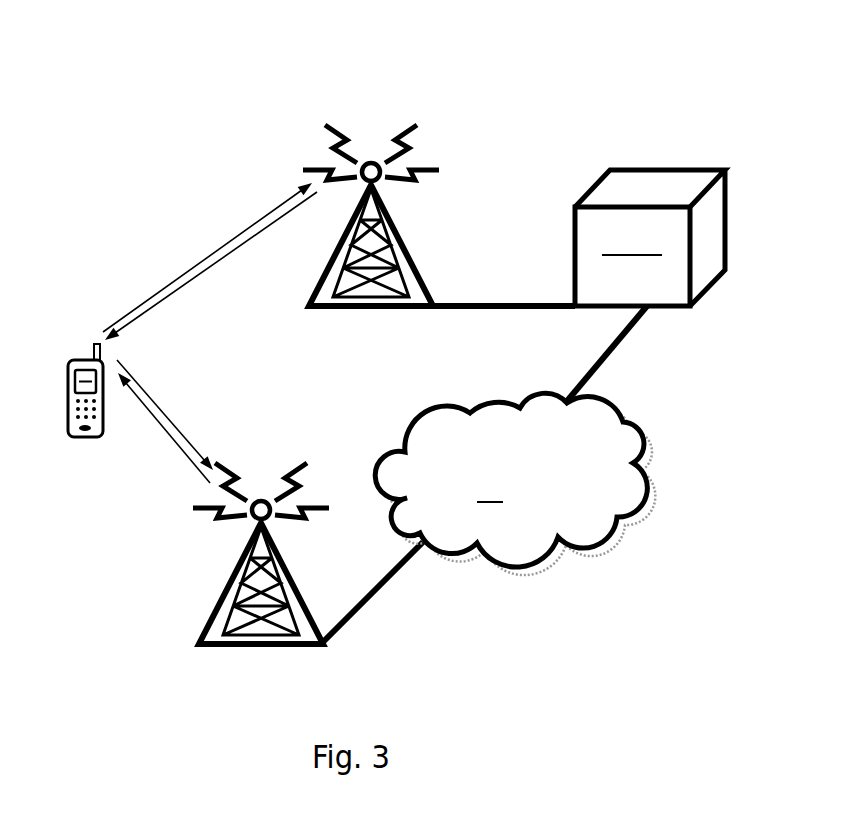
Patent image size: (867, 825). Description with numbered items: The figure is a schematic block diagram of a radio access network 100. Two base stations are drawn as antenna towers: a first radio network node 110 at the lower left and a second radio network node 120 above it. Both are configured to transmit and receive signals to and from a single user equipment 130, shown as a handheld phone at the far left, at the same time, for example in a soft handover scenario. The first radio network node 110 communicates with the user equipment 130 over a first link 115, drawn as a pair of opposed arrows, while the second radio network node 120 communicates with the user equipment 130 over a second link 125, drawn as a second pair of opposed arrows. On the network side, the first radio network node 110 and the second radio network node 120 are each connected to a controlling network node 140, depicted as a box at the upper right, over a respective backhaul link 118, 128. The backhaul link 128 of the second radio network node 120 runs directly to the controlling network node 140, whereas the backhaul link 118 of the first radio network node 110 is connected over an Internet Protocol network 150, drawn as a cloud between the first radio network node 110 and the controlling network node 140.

The radio access network 100 is at (553, 82).
The first radio network node 110 is at (269, 577).
The first link 115 is at (169, 419).
The backhaul link 118 is at (387, 602).
The second radio network node 120 is at (377, 244).
The second link 125 is at (210, 261).
The backhaul link 128 is at (499, 296).
The user equipment 130 is at (89, 428).
The controlling network node 140 is at (643, 288).
The Internet Protocol (IP) network 150 is at (515, 484).